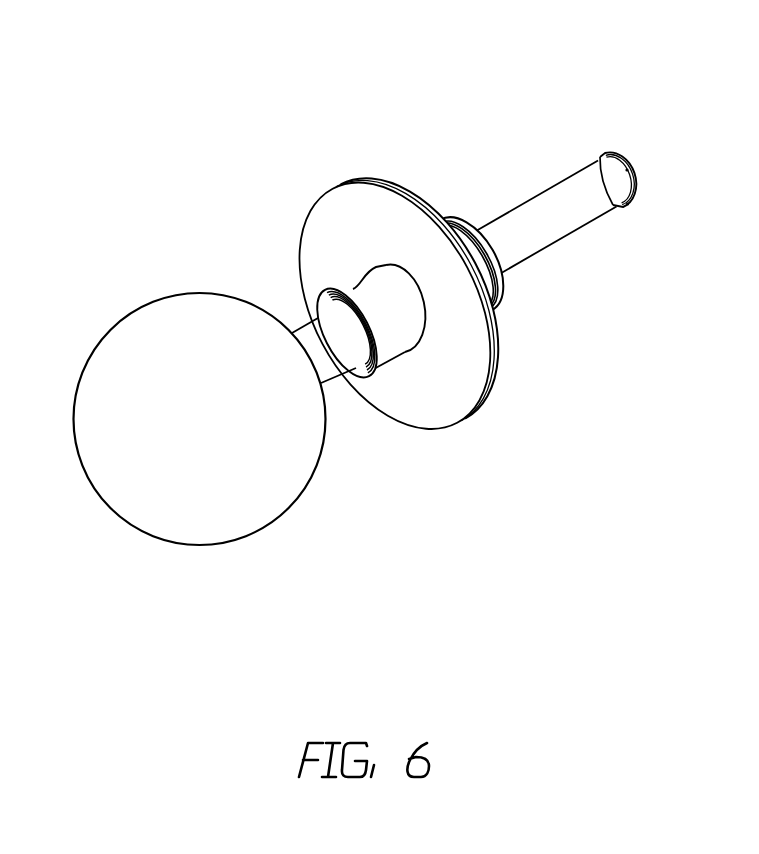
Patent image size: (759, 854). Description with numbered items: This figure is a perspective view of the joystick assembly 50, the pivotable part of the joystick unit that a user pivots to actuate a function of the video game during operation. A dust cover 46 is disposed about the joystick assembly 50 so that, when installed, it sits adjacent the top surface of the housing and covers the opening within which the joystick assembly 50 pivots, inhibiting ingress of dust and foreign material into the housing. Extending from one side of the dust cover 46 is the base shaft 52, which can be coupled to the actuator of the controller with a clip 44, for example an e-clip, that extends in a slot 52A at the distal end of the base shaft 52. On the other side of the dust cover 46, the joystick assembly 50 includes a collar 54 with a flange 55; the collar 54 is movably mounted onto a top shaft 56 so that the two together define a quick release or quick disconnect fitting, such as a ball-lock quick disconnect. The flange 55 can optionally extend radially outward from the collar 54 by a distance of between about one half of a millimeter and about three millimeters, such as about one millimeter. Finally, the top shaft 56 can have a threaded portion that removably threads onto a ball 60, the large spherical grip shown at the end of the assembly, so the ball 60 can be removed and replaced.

The joystick assembly 50 is at (408, 290).
The dust cover 46 is at (345, 206).
The base shaft 52 is at (566, 160).
The slot 52A is at (615, 143).
The clip 44 is at (656, 183).
The flange 55 is at (517, 293).
The top shaft 56 is at (305, 322).
The collar 54 is at (388, 358).
The ball 60 is at (212, 434).